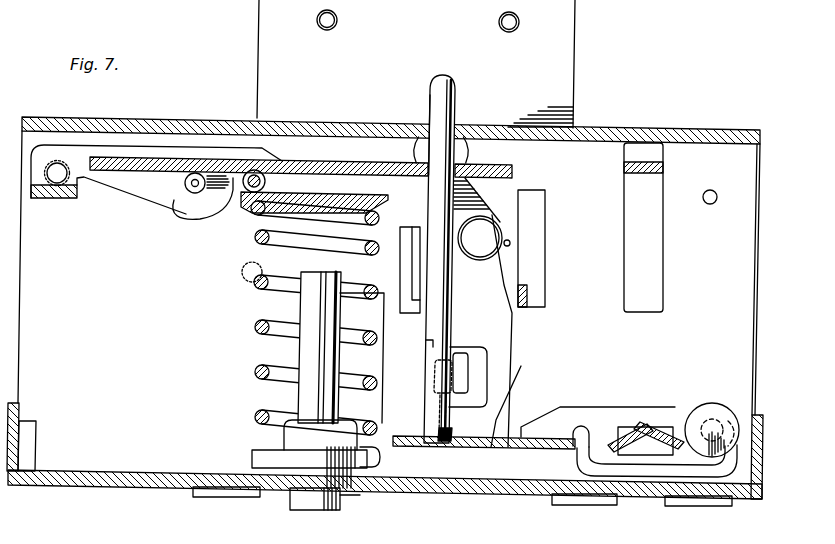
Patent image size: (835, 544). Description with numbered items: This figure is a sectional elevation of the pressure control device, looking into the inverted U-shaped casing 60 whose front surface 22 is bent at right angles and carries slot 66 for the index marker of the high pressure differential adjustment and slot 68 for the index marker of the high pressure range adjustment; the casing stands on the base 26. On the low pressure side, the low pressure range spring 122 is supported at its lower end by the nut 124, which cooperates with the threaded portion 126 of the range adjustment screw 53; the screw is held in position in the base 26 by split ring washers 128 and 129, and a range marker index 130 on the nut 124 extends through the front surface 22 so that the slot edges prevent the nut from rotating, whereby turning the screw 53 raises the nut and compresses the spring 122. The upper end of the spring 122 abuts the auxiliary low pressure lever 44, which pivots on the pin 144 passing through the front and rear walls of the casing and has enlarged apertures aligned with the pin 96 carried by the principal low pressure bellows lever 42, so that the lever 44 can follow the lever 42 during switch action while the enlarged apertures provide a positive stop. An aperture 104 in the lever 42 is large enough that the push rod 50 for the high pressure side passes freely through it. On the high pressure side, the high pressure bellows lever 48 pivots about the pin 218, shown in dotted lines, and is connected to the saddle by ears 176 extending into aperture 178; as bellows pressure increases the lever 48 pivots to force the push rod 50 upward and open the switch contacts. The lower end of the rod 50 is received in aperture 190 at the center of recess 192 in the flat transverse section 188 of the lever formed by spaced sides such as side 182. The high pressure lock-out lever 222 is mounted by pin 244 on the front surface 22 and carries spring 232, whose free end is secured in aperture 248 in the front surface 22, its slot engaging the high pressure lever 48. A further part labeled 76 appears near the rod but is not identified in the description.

The front surface 22 is at (68, 112).
The base 26 is at (268, 486).
The low pressure bellows lever 42 is at (333, 158).
The auxiliary low pressure lever 44 is at (91, 199).
The high pressure bellows lever 48 is at (515, 402).
The push rod 50 is at (457, 90).
The range adjustment screw 53 is at (338, 497).
The casing 60 is at (730, 120).
The slot 66 is at (543, 200).
The slot 68 is at (660, 227).
The plunger stem 76 is at (428, 127).
The pin 96 is at (187, 193).
The aperture 104 is at (420, 147).
The low pressure range spring 122 is at (256, 325).
The nut 124 is at (252, 461).
The threaded portion 126 is at (307, 346).
The split ring washer 128 is at (373, 497).
The split ring washer 129 is at (373, 462).
The range marker index 130 is at (266, 182).
The pin 144 is at (47, 180).
The ears 176 is at (672, 425).
The aperture 178 is at (620, 425).
The side 182 is at (557, 413).
The flat transverse section 188 is at (497, 448).
The aperture 190 is at (426, 447).
The recess 192 is at (435, 402).
The pin 218 is at (730, 396).
The high pressure lock-out lever 222 is at (502, 325).
The spring 232 is at (487, 217).
The pin 244 is at (470, 155).
The aperture 248 is at (510, 243).